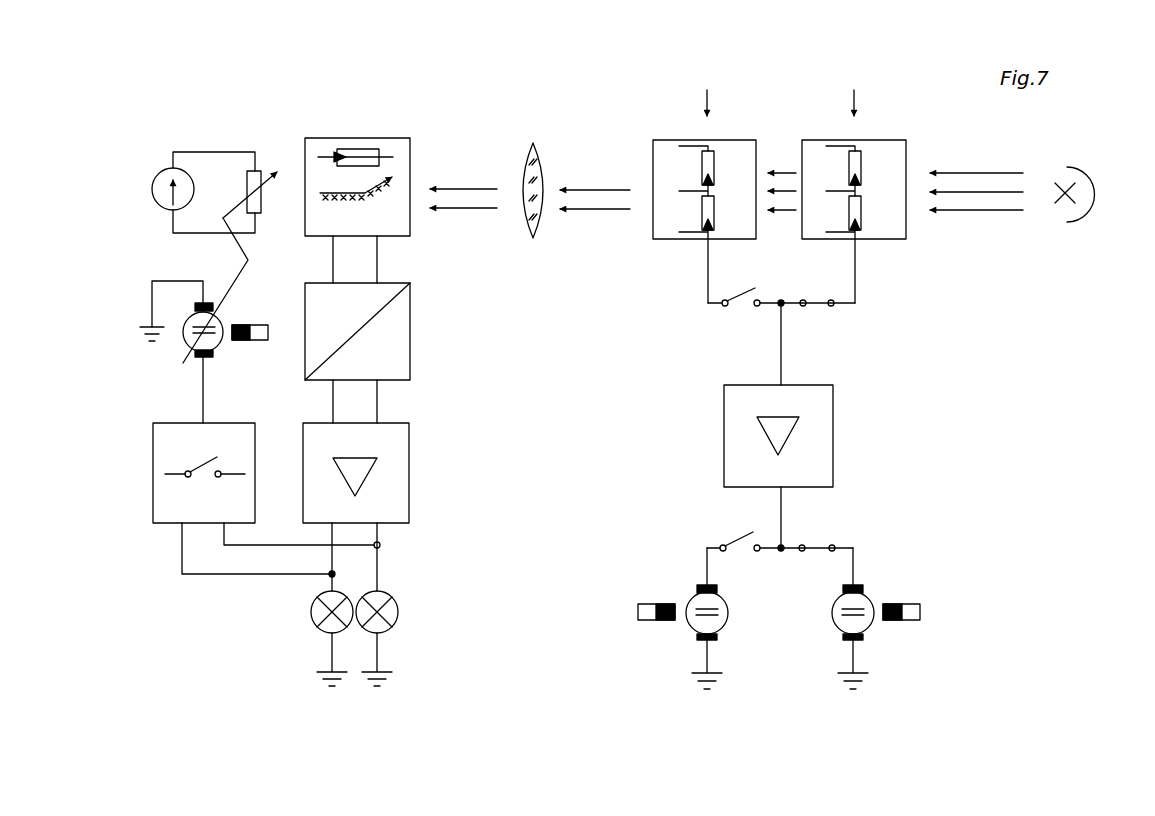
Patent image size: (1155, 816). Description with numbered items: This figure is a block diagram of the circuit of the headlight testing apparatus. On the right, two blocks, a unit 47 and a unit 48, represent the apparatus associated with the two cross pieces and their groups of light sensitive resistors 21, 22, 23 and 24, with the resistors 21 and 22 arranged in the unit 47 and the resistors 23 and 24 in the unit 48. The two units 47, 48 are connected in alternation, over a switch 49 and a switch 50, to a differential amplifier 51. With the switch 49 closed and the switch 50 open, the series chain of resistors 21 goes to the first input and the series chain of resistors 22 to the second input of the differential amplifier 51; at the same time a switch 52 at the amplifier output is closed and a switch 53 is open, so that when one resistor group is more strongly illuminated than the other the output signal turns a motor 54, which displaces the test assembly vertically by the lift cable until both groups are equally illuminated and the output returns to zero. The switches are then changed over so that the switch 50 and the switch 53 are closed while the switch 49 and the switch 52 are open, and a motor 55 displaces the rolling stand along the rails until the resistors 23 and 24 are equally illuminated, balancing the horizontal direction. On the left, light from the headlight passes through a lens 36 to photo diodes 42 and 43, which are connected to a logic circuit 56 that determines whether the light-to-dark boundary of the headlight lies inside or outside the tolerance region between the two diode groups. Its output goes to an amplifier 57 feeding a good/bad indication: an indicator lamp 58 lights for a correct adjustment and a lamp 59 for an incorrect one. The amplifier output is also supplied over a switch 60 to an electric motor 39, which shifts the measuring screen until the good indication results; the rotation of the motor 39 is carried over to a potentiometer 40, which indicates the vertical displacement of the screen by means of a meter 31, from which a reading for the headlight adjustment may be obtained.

The light sensitive resistors 21 is at (714, 167).
The light sensitive resistors 22 is at (714, 211).
The light sensitive resistors 23 is at (861, 167).
The light sensitive resistors 24 is at (861, 211).
The meter 31 is at (162, 197).
The lens 36 is at (538, 172).
The electric motor 39 is at (215, 338).
The potentiometer 40 is at (253, 198).
The photo diodes 42 is at (395, 204).
The photo diodes 43 is at (400, 163).
The unit 47 is at (715, 196).
The unit 48 is at (861, 196).
The switch 49 is at (742, 310).
The switch 50 is at (817, 308).
The differential amplifier 51 is at (820, 434).
The switch 52 is at (743, 552).
The switch 53 is at (817, 552).
The motor 54 is at (717, 620).
The motor 55 is at (865, 622).
The logic circuit 56 is at (393, 332).
The amplifier 57 is at (397, 482).
The indicator lamp 58 is at (310, 610).
The lamp 59 is at (393, 615).
The switch 60 is at (162, 500).